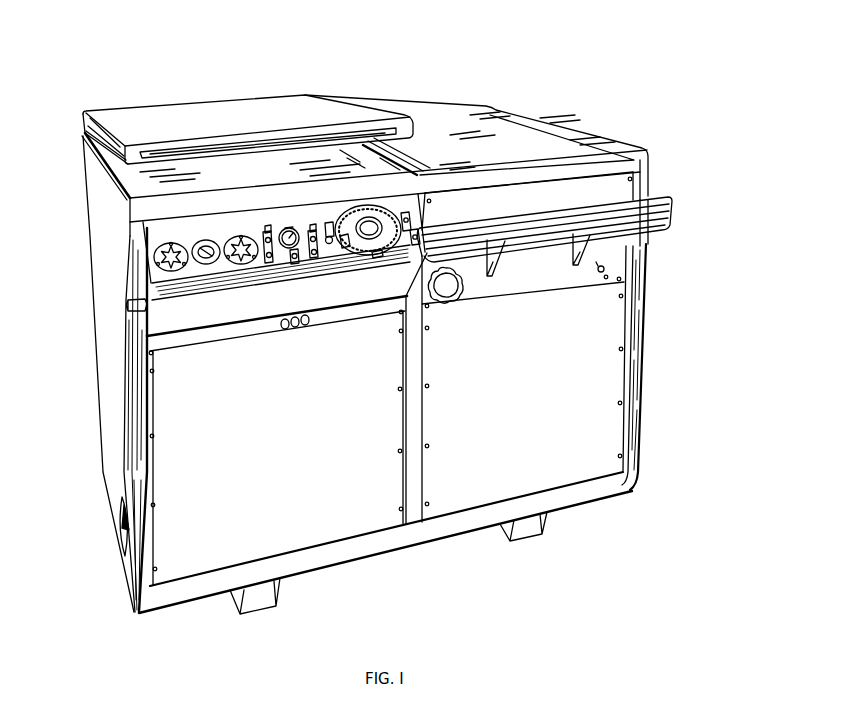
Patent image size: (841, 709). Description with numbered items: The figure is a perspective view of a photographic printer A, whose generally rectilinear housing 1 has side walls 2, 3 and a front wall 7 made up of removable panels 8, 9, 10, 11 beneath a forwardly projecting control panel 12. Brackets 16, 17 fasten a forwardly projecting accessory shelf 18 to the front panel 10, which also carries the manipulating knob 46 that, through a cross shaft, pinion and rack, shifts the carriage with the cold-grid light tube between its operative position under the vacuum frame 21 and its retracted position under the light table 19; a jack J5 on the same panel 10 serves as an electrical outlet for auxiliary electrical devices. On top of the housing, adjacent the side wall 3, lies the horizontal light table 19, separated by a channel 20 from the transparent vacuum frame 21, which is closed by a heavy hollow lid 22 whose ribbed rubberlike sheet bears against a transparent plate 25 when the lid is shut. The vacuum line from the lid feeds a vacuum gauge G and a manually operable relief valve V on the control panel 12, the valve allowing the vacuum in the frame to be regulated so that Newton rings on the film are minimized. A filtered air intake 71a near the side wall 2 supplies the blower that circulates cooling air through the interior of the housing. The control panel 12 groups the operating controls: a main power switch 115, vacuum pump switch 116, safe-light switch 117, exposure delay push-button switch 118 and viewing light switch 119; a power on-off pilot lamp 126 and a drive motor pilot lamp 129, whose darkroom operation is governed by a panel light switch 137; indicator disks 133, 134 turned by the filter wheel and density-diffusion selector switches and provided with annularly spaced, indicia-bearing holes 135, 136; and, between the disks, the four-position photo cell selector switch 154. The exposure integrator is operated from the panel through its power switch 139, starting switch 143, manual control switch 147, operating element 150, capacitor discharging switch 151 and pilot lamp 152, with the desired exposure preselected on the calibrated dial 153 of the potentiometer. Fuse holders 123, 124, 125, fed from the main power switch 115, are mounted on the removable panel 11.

The photographic printer A is at (558, 58).
The housing 1 is at (136, 608).
The side wall 2 is at (115, 452).
The side wall 3 is at (646, 292).
The front wall 7 is at (618, 482).
The removable panel 8 is at (360, 505).
The removable panel 9 is at (465, 490).
The front panel 10 is at (526, 276).
The removable panel 11 is at (207, 341).
The control panel 12 is at (150, 334).
The bracket 16 is at (496, 265).
The bracket 17 is at (538, 252).
The accessory shelf 18 is at (645, 200).
The light table 19 is at (455, 125).
The channel 20 is at (405, 168).
The vacuum frame 21 is at (127, 178).
The lid 22 is at (198, 118).
The transparent plate 25 is at (128, 200).
The manipulating knob 46 is at (454, 299).
The filtered air intake 71a is at (128, 527).
The main power switch 115 is at (325, 265).
The vacuum pump switch 116 is at (300, 263).
The safe-light switch 117 is at (288, 262).
The exposure delay push-button switch 118 is at (262, 265).
The viewing light switch 119 is at (266, 232).
The fuse holder 123 is at (283, 330).
The fuse holder 124 is at (293, 328).
The fuse holder 125 is at (308, 326).
The power on-off pilot lamp 126 is at (327, 230).
The drive motor pilot lamp 129 is at (200, 263).
The indicator disk 133 is at (243, 236).
The indicator disk 134 is at (173, 243).
The holes 135 is at (232, 263).
The holes 136 is at (155, 260).
The panel light switch 137 is at (311, 232).
The power switch 139 is at (407, 212).
The starting switch 143 is at (417, 236).
The manual control switch 147 is at (338, 252).
The operating element 150 is at (432, 217).
The capacitor discharging switch 151 is at (328, 224).
The pilot lamp 152 is at (312, 260).
The calibrated dial 153 is at (368, 225).
The photo cell selector switch 154 is at (215, 240).
The vacuum gauge G is at (290, 232).
The relief valve V is at (127, 305).
The jack J5 is at (612, 272).